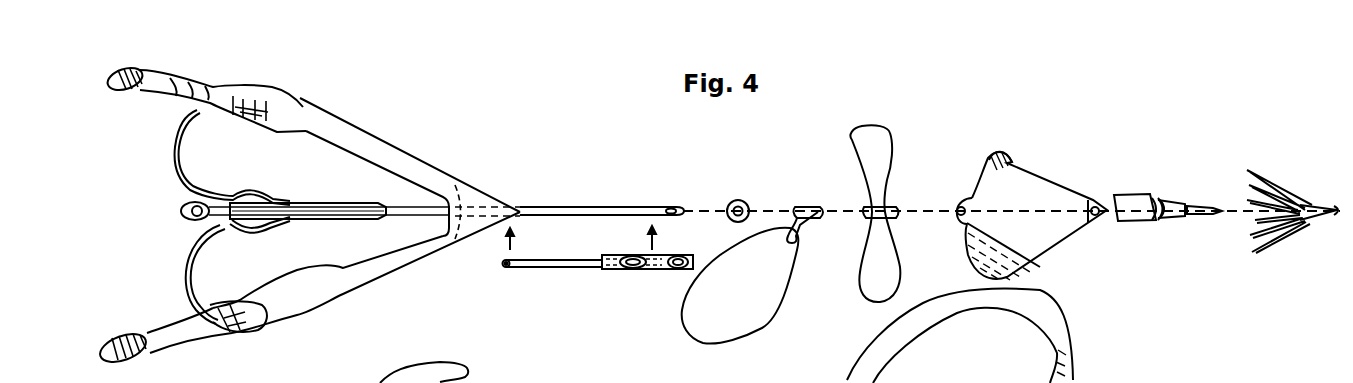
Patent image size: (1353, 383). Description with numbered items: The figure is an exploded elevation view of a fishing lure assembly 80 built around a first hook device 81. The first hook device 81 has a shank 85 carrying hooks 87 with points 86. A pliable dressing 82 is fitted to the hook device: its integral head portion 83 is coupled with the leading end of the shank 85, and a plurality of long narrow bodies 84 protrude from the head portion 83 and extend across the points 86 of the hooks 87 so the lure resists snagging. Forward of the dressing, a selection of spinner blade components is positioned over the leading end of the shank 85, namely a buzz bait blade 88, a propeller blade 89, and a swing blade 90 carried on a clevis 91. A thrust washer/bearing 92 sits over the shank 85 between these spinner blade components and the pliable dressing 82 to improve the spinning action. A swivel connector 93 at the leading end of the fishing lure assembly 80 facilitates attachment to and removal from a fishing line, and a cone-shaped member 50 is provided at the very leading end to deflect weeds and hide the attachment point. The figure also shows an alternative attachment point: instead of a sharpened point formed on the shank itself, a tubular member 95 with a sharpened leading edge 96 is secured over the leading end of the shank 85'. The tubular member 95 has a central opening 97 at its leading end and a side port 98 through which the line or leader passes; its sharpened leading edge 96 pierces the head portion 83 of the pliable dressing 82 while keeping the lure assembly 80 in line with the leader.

The fishing lure assembly 80 is at (598, 151).
The first hook device 81 is at (308, 206).
The pliable dressing 82 is at (420, 163).
The head portion 83 is at (487, 196).
The long narrow bodies 84 is at (346, 130).
The shank 85 is at (595, 212).
The shank 85' is at (553, 285).
The points 86 is at (284, 110).
The hooks 87 is at (187, 164).
The buzz bait blade 88 is at (1020, 185).
The propeller blade 89 is at (897, 154).
The swing blade 90 is at (770, 308).
The clevis 91 is at (800, 202).
The thrust washer/bearing 92 is at (737, 200).
The swivel connector 93 is at (1170, 205).
The tubular member 95 is at (652, 271).
The sharpened leading edge 96 is at (684, 266).
The central opening 97 is at (679, 271).
The side port 98 is at (630, 270).
The cone-shaped member 50 is at (1300, 200).